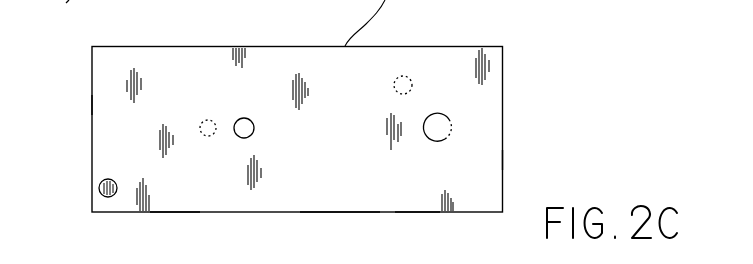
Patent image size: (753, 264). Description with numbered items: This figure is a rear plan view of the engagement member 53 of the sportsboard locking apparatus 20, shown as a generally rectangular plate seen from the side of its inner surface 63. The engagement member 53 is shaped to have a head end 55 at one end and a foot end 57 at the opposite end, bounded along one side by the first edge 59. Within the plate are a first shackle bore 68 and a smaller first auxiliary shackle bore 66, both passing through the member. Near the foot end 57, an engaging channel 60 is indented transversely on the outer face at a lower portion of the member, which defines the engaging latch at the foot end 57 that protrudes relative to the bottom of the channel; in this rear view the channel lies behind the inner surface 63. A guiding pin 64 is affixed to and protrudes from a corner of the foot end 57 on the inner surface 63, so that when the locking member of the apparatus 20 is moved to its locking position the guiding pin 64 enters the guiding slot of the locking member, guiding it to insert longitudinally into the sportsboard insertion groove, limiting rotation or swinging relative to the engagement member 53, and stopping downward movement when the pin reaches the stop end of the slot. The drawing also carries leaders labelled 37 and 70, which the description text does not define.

The sportsboard locking apparatus 20 is at (52, 245).
The leader element 37 is at (54, 13).
The engagement member 53 is at (336, 141).
The head end 55 is at (503, 160).
The foot end 57 is at (92, 104).
The first edge 59 is at (413, 211).
The engaging channel 60 is at (175, 238).
The inner surface 63 is at (358, 195).
The guiding pin 64 is at (99, 184).
The first auxiliary shackle bore 66 is at (407, 77).
The first shackle bore 68 is at (451, 122).
The aperture 70 is at (237, 138).